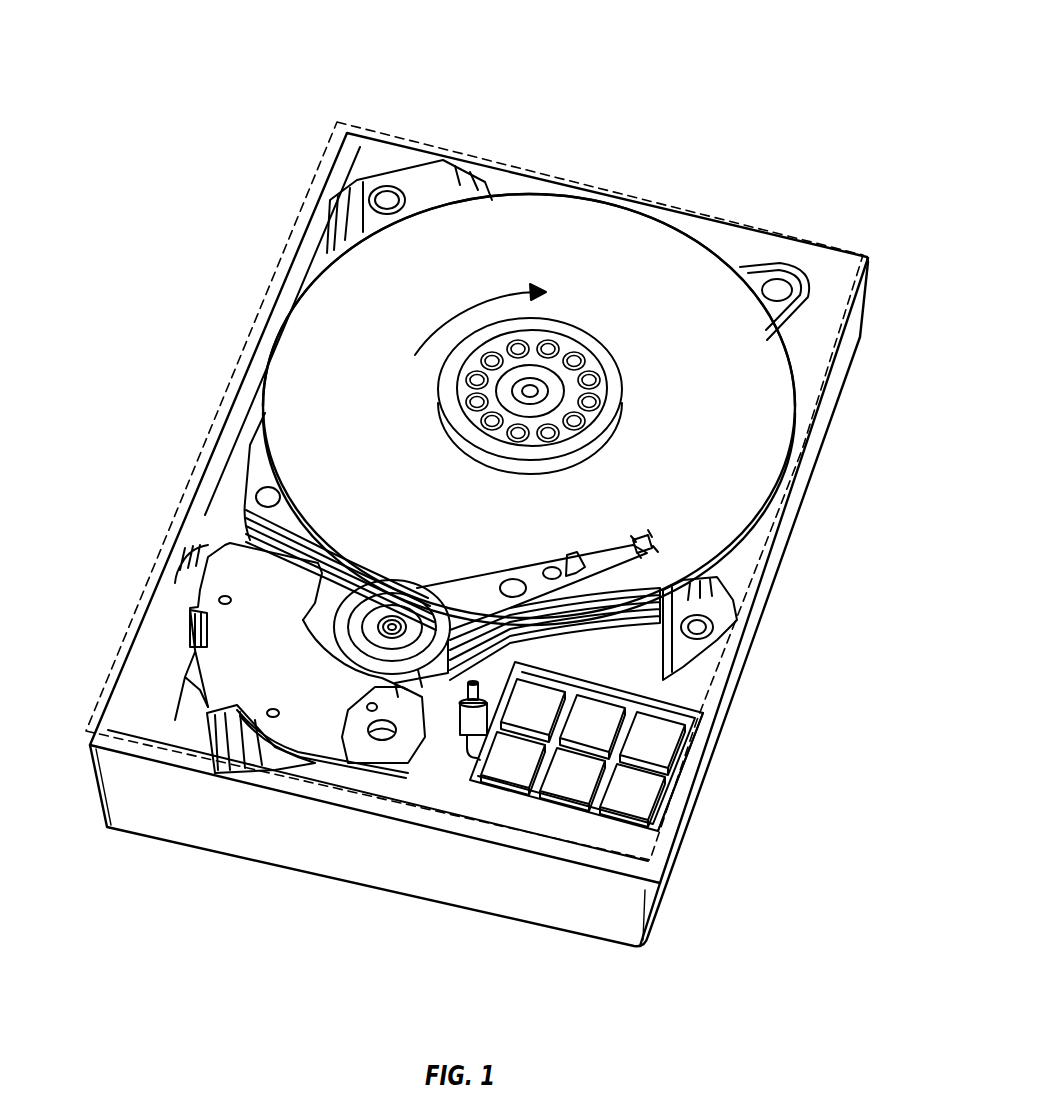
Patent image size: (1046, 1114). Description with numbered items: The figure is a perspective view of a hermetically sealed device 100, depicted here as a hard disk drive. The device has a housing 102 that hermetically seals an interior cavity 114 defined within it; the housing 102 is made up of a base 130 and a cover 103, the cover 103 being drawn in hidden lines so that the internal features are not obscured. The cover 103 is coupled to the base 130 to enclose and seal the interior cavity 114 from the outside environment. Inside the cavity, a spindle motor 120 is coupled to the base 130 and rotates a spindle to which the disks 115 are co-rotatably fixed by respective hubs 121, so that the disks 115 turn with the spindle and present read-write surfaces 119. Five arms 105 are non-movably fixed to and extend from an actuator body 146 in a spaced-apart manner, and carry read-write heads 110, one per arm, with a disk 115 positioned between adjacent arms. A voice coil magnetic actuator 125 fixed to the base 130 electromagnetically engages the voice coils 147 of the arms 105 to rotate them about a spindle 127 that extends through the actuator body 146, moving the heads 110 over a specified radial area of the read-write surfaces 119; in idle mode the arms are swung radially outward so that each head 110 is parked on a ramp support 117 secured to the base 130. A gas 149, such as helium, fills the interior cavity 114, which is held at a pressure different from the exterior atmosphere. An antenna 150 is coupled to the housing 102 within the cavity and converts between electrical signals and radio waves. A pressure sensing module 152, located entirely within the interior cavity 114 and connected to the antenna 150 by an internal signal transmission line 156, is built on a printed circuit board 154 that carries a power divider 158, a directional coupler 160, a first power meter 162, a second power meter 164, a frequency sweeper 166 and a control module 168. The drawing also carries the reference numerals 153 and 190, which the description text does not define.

The hermetically sealed device 100 is at (683, 102).
The housing 102 is at (160, 836).
The cover 103 is at (336, 147).
The arms 105 is at (503, 573).
The read-write heads 110 is at (632, 535).
The interior cavity 114 is at (603, 668).
The disks 115 is at (755, 453).
The ramp support 117 is at (699, 631).
The read-write surfaces 119 is at (765, 348).
The spindle motor 120 is at (565, 380).
The hubs 121 is at (620, 393).
The voice coil magnetic (VCM) actuator 125 is at (185, 592).
The spindle 127 is at (320, 640).
The base 130 is at (732, 560).
The actuator body 146 is at (418, 674).
The voice coils 147 is at (322, 637).
The gas 149 is at (217, 537).
The antenna 150 is at (440, 702).
The pressure sensing module 152 is at (615, 682).
The base side wall 153 is at (595, 868).
The printed circuit board 154 is at (528, 707).
The internal signal transmission line 156 is at (456, 740).
The power divider 158 is at (580, 783).
The directional coupler 160 is at (513, 770).
The first power meter 162 is at (663, 737).
The second power meter 164 is at (597, 725).
The frequency sweeper 166 is at (638, 835).
The control module 168 is at (645, 790).
The rotation direction 190 is at (462, 318).